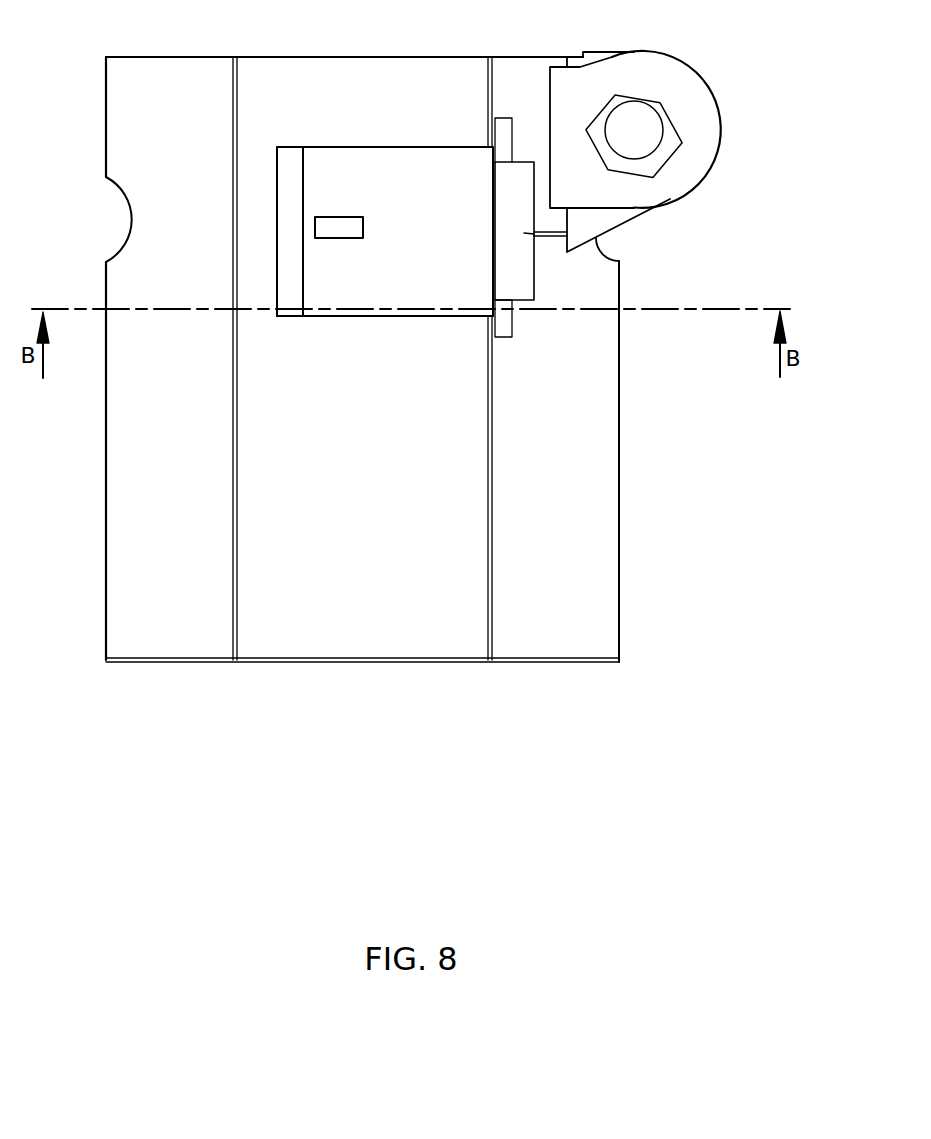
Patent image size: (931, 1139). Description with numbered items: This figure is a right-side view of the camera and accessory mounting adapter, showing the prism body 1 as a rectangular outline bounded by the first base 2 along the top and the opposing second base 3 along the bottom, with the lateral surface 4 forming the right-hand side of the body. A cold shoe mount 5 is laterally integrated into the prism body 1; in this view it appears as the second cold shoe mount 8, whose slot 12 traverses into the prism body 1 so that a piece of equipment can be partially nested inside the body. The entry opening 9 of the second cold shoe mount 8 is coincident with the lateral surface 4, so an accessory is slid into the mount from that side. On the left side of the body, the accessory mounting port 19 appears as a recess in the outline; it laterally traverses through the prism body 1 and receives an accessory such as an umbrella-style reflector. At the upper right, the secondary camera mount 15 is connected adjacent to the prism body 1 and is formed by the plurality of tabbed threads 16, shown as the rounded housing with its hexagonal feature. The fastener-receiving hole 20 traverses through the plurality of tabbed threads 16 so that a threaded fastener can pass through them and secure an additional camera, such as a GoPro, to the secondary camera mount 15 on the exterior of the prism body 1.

The prism body 1 is at (113, 675).
The first base 2 is at (280, 57).
The second base 3 is at (319, 663).
The lateral surface 4 is at (539, 477).
The cold shoe mount 5 is at (296, 323).
The second cold shoe mount 8 is at (268, 240).
The entry opening 9 is at (497, 232).
The slot 12 is at (415, 232).
The secondary camera mount 15 is at (738, 97).
The plurality of tabbed threads 16 is at (662, 60).
The accessory mounting port 19 is at (118, 226).
The fastener-receiving hole 20 is at (635, 150).